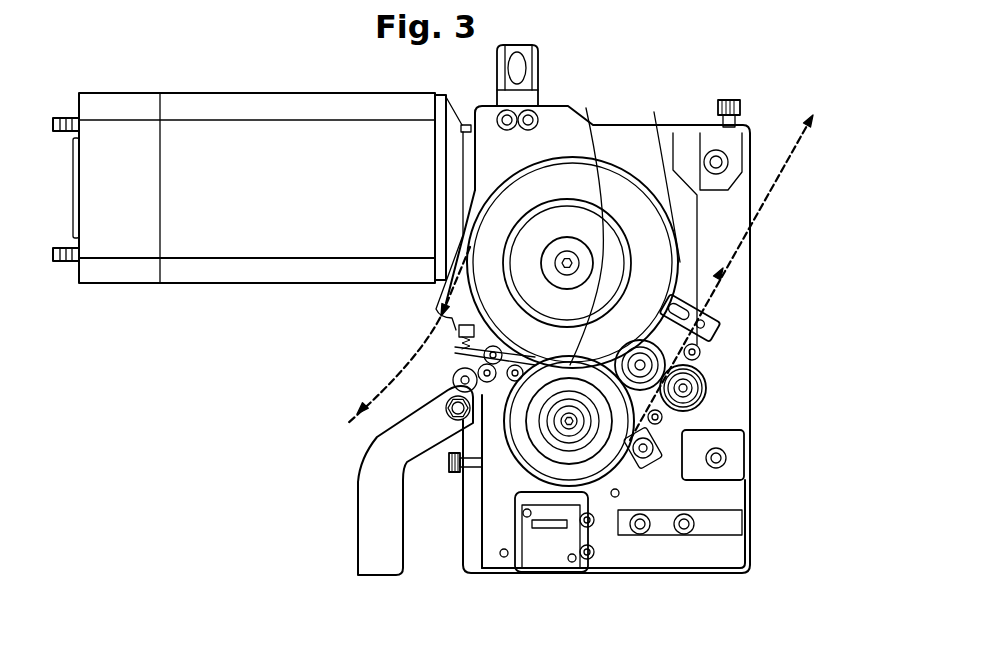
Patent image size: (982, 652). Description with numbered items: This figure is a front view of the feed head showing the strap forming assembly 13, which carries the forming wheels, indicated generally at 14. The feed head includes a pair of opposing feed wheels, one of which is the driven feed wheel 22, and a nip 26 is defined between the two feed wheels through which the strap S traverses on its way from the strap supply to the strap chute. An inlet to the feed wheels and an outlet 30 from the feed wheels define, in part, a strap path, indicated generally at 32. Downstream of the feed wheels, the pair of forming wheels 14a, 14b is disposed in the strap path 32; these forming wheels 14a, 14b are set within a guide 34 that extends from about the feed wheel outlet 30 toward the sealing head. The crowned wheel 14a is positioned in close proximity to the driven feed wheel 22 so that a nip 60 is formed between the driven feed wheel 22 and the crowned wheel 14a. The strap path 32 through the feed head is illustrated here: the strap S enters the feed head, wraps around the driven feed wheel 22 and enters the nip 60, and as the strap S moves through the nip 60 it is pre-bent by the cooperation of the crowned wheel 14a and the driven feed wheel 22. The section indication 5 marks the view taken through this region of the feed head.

The forming assembly 13 is at (713, 348).
The forming wheels 14 is at (710, 377).
The crowned wheel 14a is at (661, 450).
The forming wheel 14b is at (703, 397).
The driven feed wheel 22 is at (619, 200).
The nip 26 is at (586, 225).
The outlet 30 is at (745, 308).
The strap path 32 is at (792, 158).
The guide 34 is at (358, 512).
The nip 60 is at (662, 177).
The section line V-V 5 is at (690, 257).
The strap S is at (417, 358).